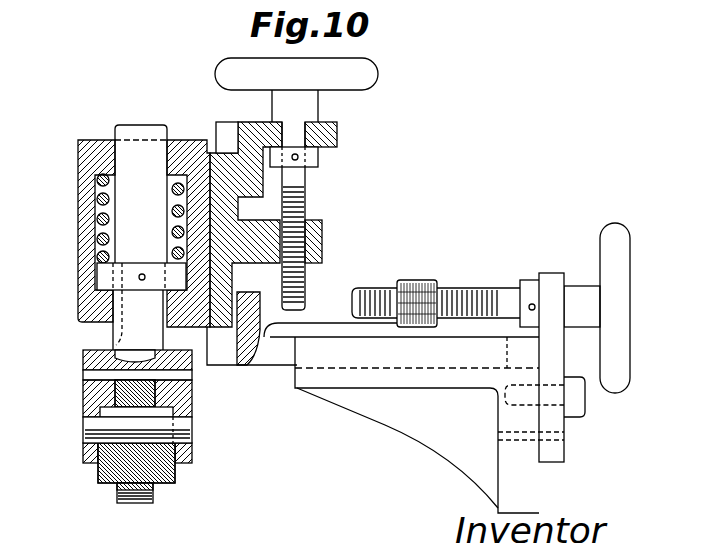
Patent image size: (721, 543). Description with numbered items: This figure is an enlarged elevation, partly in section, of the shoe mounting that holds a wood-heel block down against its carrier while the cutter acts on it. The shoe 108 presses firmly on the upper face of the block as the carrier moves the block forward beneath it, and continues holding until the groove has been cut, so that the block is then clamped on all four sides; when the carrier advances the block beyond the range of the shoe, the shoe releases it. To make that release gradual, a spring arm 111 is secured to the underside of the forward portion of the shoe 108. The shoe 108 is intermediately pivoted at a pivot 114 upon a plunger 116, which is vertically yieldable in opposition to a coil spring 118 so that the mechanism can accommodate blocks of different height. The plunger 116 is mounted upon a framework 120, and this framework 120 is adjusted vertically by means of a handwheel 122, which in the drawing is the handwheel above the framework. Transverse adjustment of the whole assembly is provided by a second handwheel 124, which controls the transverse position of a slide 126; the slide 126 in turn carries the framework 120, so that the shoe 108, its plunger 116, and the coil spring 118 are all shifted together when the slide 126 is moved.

The shoe 108 is at (194, 398).
The spring arm 111 is at (128, 503).
The pivot 114 is at (181, 428).
The plunger 116 is at (135, 162).
The coil spring 118 is at (96, 208).
The framework 120 is at (210, 150).
The handwheel 122 is at (312, 183).
The handwheel 124 is at (578, 280).
The slide 126 is at (318, 326).